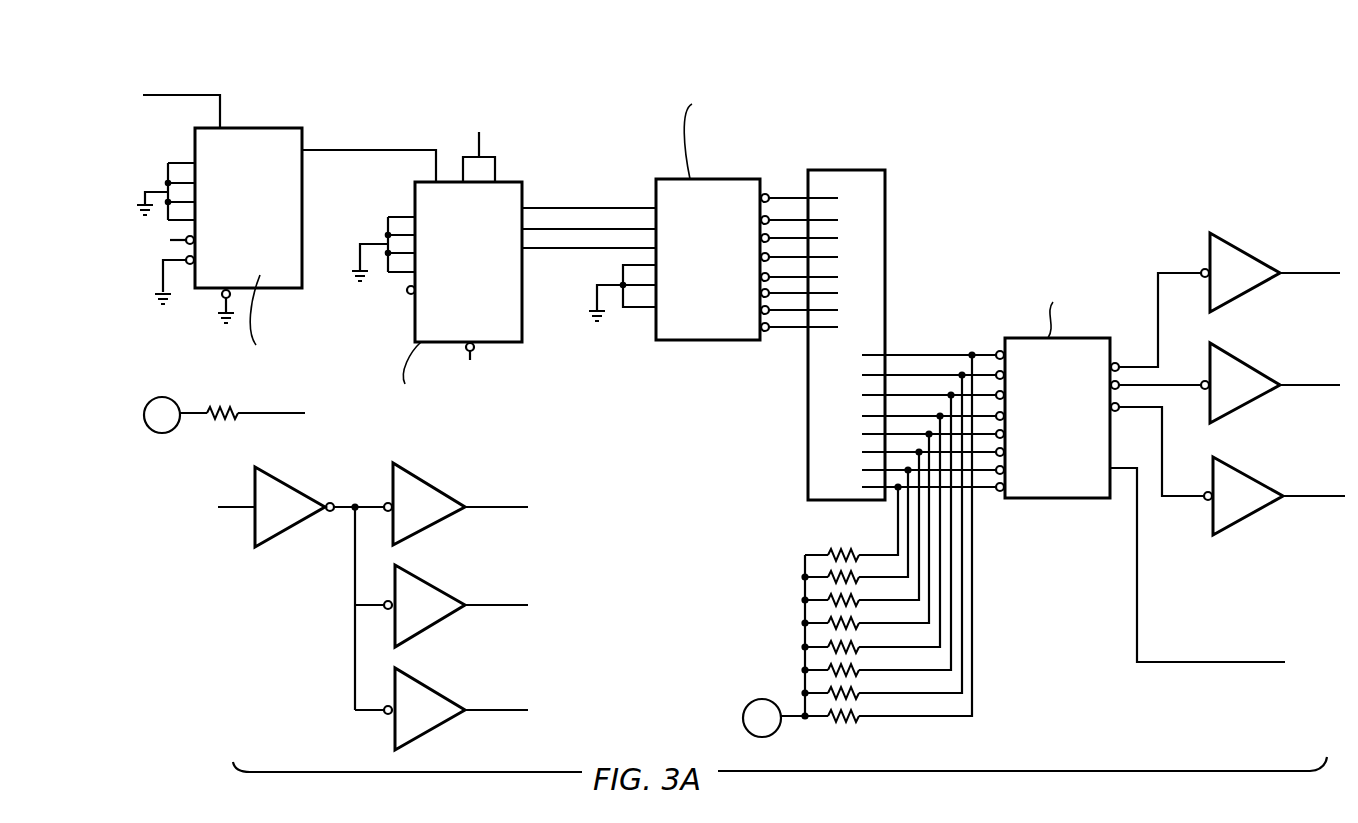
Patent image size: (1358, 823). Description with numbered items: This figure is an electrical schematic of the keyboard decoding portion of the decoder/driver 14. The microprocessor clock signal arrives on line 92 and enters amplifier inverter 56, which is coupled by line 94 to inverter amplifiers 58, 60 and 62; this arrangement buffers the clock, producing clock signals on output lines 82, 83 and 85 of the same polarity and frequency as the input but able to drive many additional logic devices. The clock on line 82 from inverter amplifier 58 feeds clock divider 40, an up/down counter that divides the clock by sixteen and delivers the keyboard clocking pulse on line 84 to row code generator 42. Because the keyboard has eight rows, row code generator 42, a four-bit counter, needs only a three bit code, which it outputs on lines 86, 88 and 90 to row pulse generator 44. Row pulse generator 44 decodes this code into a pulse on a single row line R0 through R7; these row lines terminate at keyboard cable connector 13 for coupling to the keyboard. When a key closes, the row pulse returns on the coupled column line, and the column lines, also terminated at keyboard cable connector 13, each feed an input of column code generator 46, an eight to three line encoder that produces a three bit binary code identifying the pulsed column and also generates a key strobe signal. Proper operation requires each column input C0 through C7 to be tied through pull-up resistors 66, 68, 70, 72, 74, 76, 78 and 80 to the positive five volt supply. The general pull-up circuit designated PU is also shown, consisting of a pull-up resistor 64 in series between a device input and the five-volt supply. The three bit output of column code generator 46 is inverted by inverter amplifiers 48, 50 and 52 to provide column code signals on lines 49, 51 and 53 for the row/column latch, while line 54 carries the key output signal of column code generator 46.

The keyboard cable connector 13 is at (885, 190).
The decoder/driver 14 is at (692, 447).
The clock divider 40 is at (302, 228).
The row code generator 42 is at (522, 306).
The row pulse generator 44 is at (680, 340).
The column code generator 46 is at (1060, 498).
The inverter amplifier 48 is at (1245, 284).
The column code line 49 is at (1326, 274).
The inverter amplifier 50 is at (1245, 396).
The column code line 51 is at (1328, 386).
The inverter amplifier 52 is at (1248, 507).
The column code line 53 is at (1333, 497).
The key output line KY 54 is at (1219, 662).
The amplifier inverter 56 is at (285, 520).
The inverter amplifier 58 is at (423, 520).
The inverter amplifier 60 is at (425, 617).
The inverter amplifier 62 is at (425, 722).
The pull-up resistor 64 is at (221, 410).
The pull-up resistor 66 is at (862, 716).
The pull-up resistor 68 is at (862, 693).
The pull-up resistor 70 is at (862, 670).
The pull-up resistor 72 is at (862, 647).
The pull-up resistor 74 is at (862, 623).
The pull-up resistor 76 is at (860, 600).
The pull-up resistor 78 is at (860, 577).
The pull-up resistor 80 is at (852, 553).
The clock output line 82 is at (198, 95).
The clock output line 83 is at (528, 605).
The keyboard clocking pulse line 84 is at (398, 150).
The clock output line 85 is at (528, 710).
The row code line 86 is at (592, 208).
The row code line 88 is at (610, 229).
The row code line 90 is at (590, 248).
The clock signal line 92 is at (232, 507).
The inverter coupling line 94 is at (349, 505).